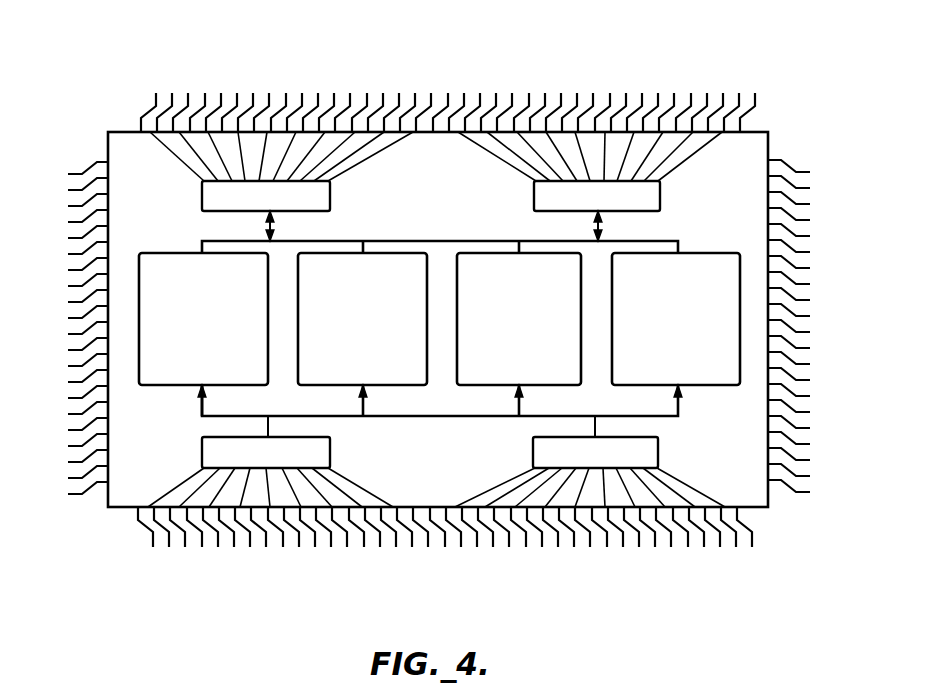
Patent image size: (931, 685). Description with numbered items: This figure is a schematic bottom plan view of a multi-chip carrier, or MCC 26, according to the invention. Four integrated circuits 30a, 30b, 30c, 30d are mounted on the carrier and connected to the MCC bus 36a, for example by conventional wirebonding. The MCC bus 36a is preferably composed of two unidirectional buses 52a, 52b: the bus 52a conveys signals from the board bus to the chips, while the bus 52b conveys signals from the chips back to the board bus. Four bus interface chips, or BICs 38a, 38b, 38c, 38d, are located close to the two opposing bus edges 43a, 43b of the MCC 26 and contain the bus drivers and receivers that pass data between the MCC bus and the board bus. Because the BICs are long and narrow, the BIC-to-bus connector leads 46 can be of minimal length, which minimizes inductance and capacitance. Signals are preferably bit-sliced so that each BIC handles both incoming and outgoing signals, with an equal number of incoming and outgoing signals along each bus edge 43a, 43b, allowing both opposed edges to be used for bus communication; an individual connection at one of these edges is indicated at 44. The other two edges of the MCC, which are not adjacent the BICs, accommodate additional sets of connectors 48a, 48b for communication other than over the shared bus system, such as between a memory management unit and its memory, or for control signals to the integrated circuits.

The multi-chip carrier 26 is at (74, 126).
The integrated circuit 30a is at (692, 332).
The integrated circuit 30b is at (535, 332).
The integrated circuit 30c is at (378, 332).
The integrated circuit 30d is at (220, 332).
The MCC bus 36a is at (199, 411).
The bus interface chip 38a is at (659, 452).
The bus interface chip 38b is at (661, 196).
The bus interface chip 38c is at (331, 452).
The bus interface chip 38d is at (331, 196).
The bus edge 43a is at (125, 71).
The bus edge 43b is at (767, 552).
The pin 44 is at (765, 97).
The BIC-to-bus connector lead 46 is at (487, 153).
The additional set of connectors 48a is at (803, 165).
The additional set of connectors 48b is at (74, 497).
The unidirectional bus 52a is at (432, 418).
The unidirectional bus 52b is at (418, 239).